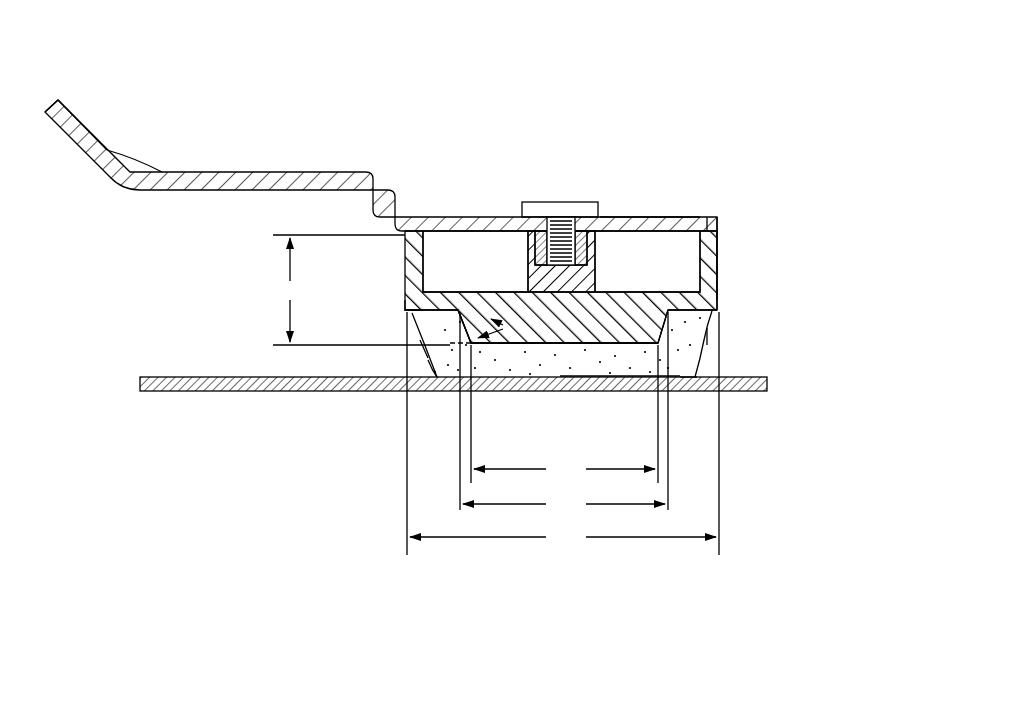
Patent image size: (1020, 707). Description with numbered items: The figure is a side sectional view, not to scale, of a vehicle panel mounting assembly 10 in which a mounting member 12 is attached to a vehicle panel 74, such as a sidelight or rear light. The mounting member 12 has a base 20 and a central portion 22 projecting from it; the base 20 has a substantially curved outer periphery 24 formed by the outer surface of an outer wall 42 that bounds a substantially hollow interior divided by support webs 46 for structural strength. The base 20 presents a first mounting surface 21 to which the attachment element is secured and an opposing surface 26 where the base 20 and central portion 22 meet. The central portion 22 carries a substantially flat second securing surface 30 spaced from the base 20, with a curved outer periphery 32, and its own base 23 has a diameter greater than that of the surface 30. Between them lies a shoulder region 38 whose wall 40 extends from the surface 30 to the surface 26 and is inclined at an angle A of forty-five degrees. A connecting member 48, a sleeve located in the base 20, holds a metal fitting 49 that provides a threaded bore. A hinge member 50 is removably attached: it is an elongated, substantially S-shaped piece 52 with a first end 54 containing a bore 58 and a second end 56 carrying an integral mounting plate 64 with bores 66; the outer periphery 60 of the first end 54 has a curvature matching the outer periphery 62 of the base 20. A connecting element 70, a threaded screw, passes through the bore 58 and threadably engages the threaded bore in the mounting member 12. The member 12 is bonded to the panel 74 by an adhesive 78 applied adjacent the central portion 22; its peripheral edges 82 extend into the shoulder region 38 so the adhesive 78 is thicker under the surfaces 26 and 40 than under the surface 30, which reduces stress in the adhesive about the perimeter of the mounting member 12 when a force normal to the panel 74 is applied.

The mounting assembly 10 is at (692, 78).
The mounting member 12 is at (806, 257).
The base 20 is at (717, 320).
The first mounting surface 21 is at (708, 216).
The central portion 22 is at (497, 347).
The base of the central portion 23 is at (422, 318).
The outer periphery 24 is at (718, 285).
The opposing surface 26 is at (417, 322).
The second securing surface 30 is at (571, 347).
The outer periphery of surface 32 is at (430, 372).
The shoulder region 38 is at (710, 328).
The wall 40 is at (688, 380).
The outer wall 42 is at (720, 257).
The support webs 46 is at (486, 276).
The connecting member 48 is at (530, 268).
The metal fitting 49 is at (535, 247).
The hinge member 50 is at (284, 78).
The S-shaped piece 52 is at (237, 170).
The first end 54 is at (668, 212).
The second end 56 is at (109, 110).
The bore 58 is at (596, 277).
The outer periphery of first end 60 is at (724, 221).
The outer periphery of base 62 is at (724, 240).
The mounting plate 64 is at (72, 112).
The bores 66 is at (100, 162).
The connecting element 70 is at (557, 202).
The vehicle panel 74 is at (186, 392).
The adhesive 78 is at (620, 363).
The peripheral edges 82 is at (717, 339).